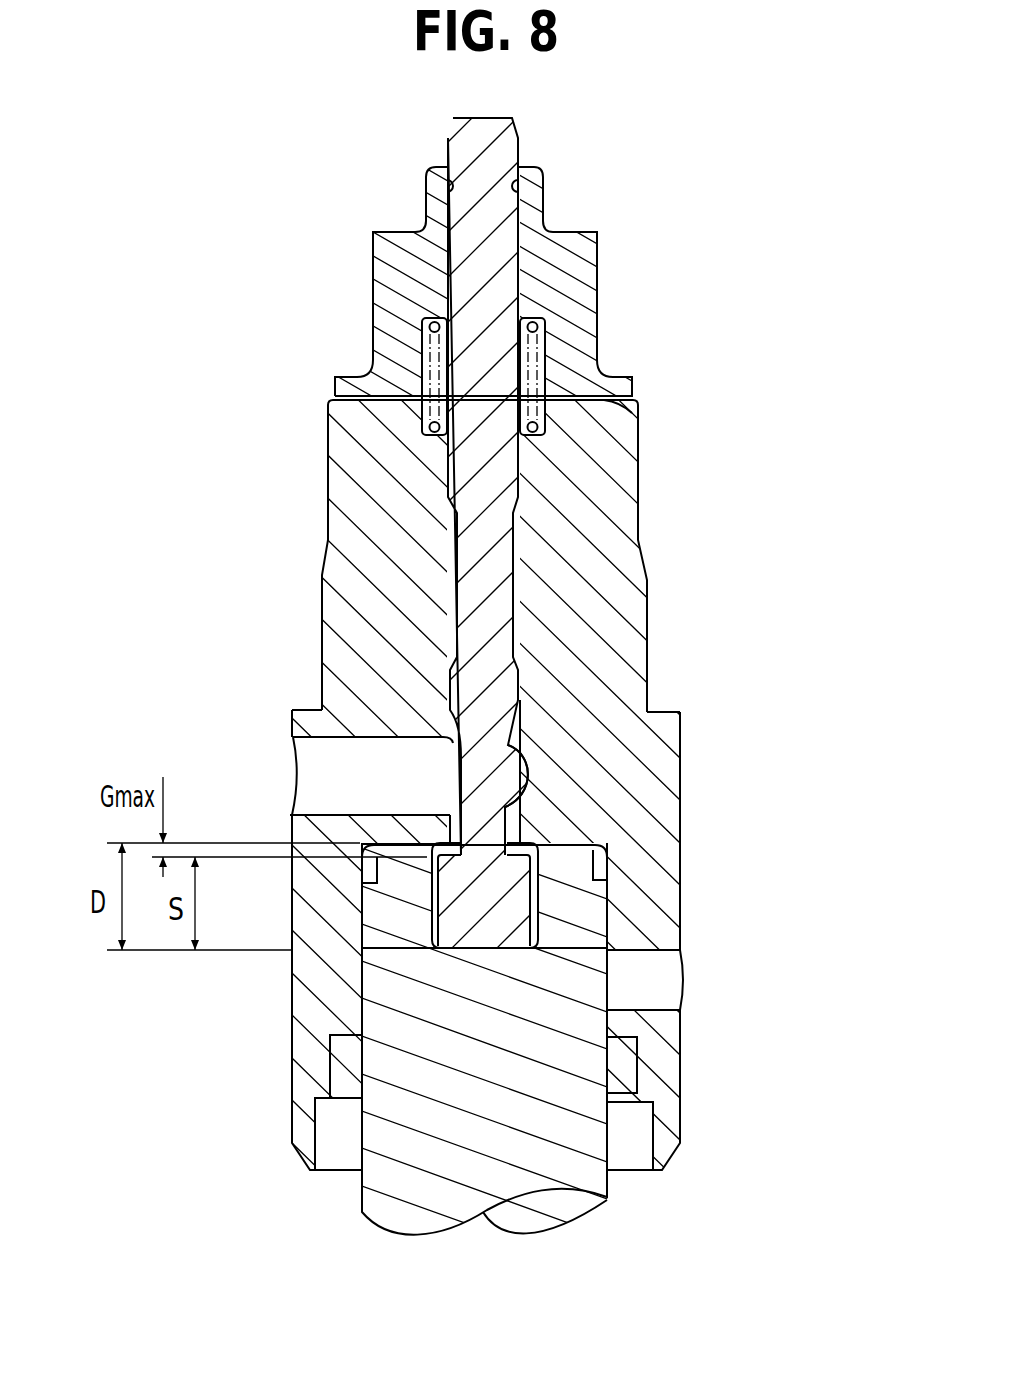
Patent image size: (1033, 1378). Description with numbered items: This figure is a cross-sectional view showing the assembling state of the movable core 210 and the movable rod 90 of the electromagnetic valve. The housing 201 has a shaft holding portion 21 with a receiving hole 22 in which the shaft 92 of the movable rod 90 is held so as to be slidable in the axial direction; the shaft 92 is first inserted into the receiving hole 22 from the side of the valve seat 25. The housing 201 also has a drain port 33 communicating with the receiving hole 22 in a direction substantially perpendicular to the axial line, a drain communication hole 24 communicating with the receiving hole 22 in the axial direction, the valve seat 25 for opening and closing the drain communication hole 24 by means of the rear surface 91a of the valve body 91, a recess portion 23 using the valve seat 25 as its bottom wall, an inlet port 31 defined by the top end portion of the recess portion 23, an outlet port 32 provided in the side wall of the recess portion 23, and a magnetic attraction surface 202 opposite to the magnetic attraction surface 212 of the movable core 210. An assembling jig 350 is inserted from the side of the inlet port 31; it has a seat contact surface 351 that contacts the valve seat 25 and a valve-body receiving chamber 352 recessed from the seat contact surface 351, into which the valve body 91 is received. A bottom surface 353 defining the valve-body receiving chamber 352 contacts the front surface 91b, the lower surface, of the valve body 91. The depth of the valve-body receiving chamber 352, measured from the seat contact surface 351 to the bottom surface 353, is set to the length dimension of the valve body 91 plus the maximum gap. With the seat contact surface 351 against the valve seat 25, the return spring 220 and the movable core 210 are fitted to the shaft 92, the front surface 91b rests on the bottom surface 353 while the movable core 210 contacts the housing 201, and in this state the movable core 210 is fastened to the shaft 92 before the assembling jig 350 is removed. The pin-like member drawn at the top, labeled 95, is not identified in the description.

The valve pin 95 is at (500, 235).
The return spring 220 is at (372, 320).
The movable core 210 is at (590, 290).
The magnetic attraction surface 202 is at (360, 380).
The magnetic attraction surface 212 is at (640, 418).
The receiving hole 22 is at (515, 535).
The shaft 92 is at (467, 593).
The movable rod 90 is at (520, 558).
The shaft holding portion 21 is at (537, 637).
The housing 201 is at (600, 675).
The drain port 33 is at (357, 756).
The valve seat 25 is at (432, 822).
The drain communication hole 24 is at (513, 820).
The valve body 91 is at (433, 820).
The rear surface 91a is at (525, 837).
The front surface 91b is at (470, 950).
The seat contact surface 351 is at (573, 842).
The valve-body receiving chamber 352 is at (540, 873).
The bottom surface 353 is at (495, 937).
The outlet port 32 is at (655, 985).
The recess portion 23 is at (377, 1023).
The inlet port 31 is at (627, 1153).
The assembling jig 350 is at (353, 1200).